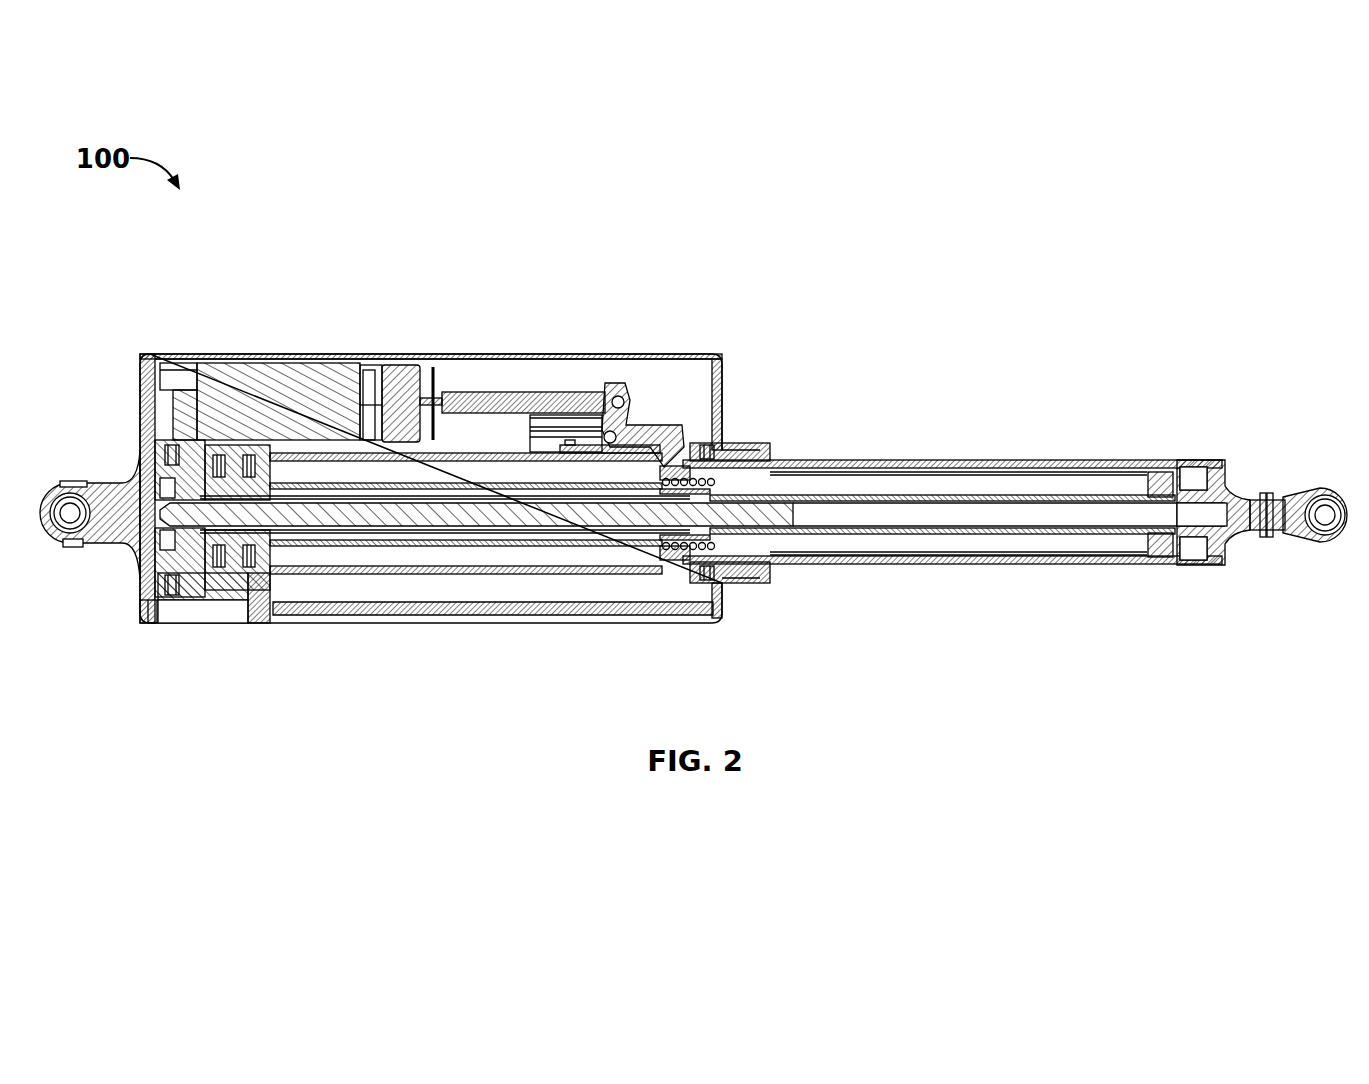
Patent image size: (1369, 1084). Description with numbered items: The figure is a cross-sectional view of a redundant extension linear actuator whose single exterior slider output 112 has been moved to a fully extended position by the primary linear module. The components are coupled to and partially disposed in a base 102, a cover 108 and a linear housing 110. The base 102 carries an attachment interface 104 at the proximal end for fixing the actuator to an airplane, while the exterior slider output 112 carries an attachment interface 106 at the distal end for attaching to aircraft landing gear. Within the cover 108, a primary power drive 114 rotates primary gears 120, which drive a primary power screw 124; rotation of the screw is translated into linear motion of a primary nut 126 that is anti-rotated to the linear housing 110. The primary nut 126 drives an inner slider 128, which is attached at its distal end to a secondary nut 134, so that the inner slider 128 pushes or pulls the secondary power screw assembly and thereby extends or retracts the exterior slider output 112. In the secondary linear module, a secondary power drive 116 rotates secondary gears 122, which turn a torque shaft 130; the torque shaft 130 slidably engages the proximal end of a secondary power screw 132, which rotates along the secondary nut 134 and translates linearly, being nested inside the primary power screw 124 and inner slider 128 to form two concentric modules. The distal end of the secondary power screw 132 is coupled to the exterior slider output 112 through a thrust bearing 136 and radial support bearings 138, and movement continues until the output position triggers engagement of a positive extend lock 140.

The base 102 is at (157, 357).
The attachment interface 104 is at (75, 497).
The attachment interface 106 is at (1325, 508).
The cover 108 is at (565, 372).
The linear housing 110 is at (478, 604).
The exterior slider output 112 is at (935, 565).
The primary power drive 114 is at (480, 425).
The secondary power drive 116 is at (292, 385).
The primary gears 120 is at (225, 590).
The secondary gears 122 is at (160, 565).
The primary power screw 124 is at (380, 545).
The primary nut 126 is at (665, 565).
The inner slider 128 is at (1088, 470).
The torque shaft 130 is at (770, 515).
The secondary power screw 132 is at (1133, 490).
The secondary nut 134 is at (1163, 545).
The thrust bearing 136 is at (1185, 565).
The radial support bearings 138 is at (1205, 475).
The positive extend lock 140 is at (660, 430).